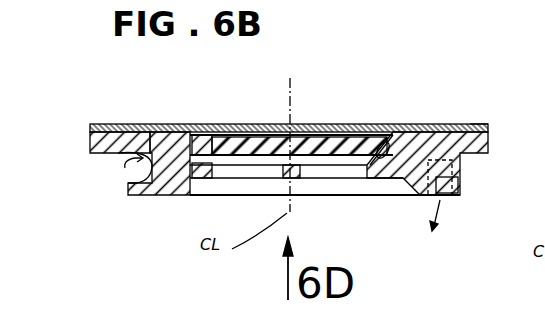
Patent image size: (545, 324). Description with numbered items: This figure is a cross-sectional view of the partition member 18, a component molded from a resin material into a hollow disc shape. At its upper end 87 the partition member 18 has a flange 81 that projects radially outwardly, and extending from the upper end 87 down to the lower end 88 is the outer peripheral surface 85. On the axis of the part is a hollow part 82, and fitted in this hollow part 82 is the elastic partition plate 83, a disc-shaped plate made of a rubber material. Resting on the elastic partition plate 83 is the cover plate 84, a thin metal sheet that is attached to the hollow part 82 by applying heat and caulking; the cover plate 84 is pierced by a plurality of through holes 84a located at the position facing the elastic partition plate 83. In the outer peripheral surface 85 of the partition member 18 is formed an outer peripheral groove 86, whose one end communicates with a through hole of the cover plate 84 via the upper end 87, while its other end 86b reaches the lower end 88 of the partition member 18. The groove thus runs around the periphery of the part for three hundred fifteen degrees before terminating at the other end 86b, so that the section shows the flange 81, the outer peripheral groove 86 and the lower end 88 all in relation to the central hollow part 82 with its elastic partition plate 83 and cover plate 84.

The partition member 18 is at (143, 123).
The flange 81 is at (508, 125).
The hollow part 82 is at (385, 131).
The elastic partition plate 83 is at (340, 150).
The cover plate 84 is at (175, 123).
The through holes 84a is at (320, 150).
The outer peripheral surface 85 is at (125, 180).
The outer peripheral groove 86 is at (133, 185).
The other end of outer peripheral groove 86b is at (433, 196).
The upper end of partition member 87 is at (455, 131).
The lower end of partition member 88 is at (445, 197).